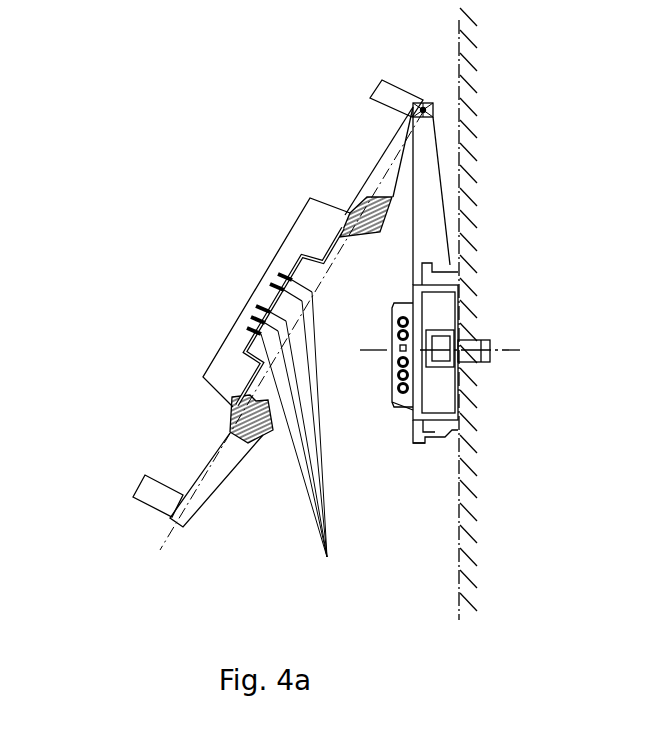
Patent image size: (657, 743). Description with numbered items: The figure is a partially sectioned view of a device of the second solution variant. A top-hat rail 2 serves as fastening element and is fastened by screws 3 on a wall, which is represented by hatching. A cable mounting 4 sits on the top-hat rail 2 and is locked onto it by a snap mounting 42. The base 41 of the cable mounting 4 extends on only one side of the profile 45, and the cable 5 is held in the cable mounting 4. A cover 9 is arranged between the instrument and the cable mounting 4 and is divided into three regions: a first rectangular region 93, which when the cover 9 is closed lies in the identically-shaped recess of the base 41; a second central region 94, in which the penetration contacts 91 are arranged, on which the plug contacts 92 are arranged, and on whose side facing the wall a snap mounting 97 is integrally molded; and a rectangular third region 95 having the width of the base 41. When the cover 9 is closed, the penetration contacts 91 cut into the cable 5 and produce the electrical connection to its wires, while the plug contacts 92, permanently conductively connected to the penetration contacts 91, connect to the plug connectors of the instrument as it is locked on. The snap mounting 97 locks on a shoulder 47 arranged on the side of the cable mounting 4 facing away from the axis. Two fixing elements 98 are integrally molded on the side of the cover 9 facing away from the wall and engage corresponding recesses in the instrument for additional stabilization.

The top-hat rail 2 is at (457, 393).
The screw 3 is at (490, 345).
The cable mounting 4 is at (440, 214).
The base 41 is at (423, 158).
The snap mounting 42 is at (445, 262).
The profile 45 is at (402, 405).
The shoulder 47 is at (420, 443).
The cable 5 is at (395, 373).
The cover 9 is at (208, 347).
The penetration contacts 91 is at (303, 438).
The plug contacts 92 is at (247, 328).
The first rectangular region 93 is at (407, 145).
The second central region 94 is at (303, 227).
The third region 95 is at (210, 480).
The snap mounting 97 is at (233, 410).
The fixing elements 98 is at (400, 102).